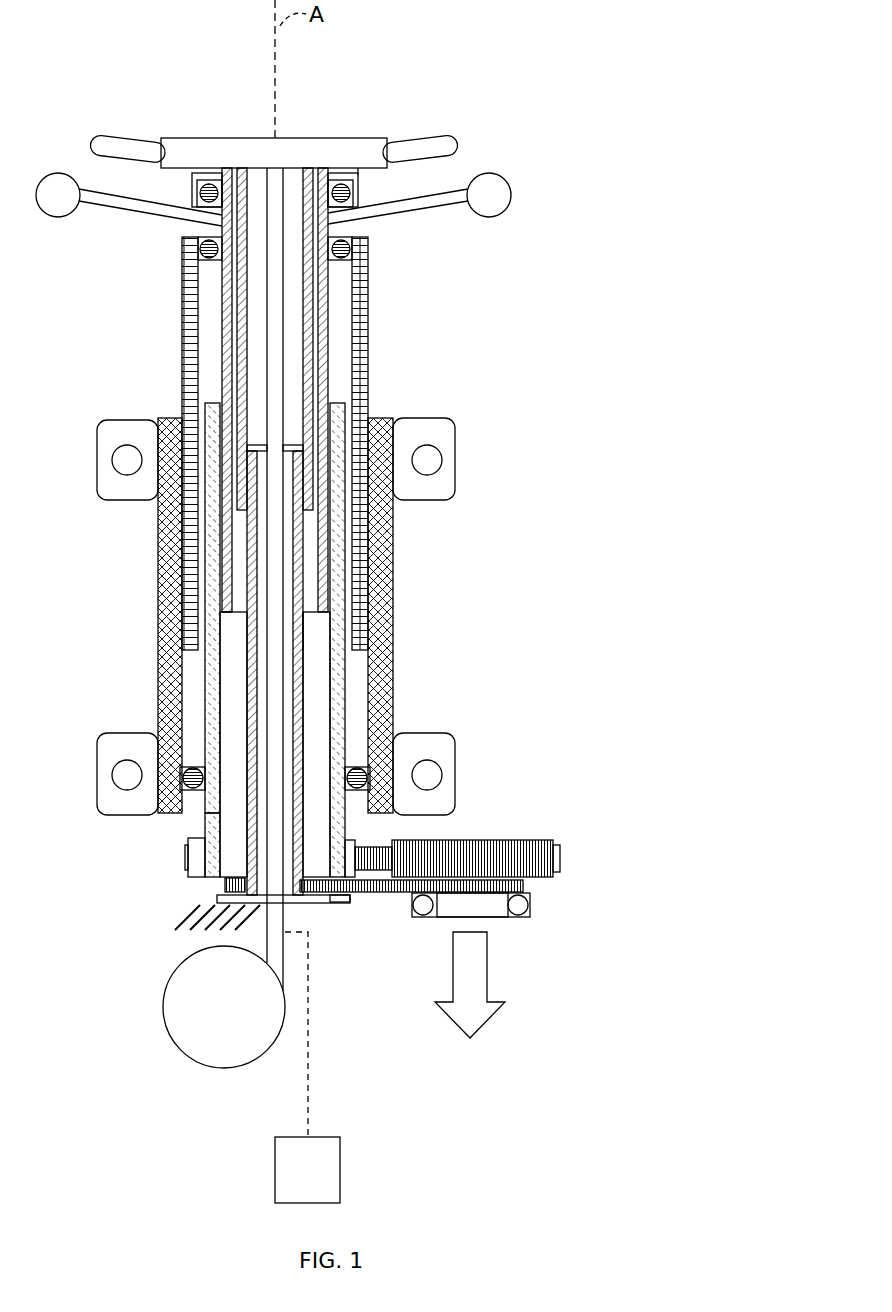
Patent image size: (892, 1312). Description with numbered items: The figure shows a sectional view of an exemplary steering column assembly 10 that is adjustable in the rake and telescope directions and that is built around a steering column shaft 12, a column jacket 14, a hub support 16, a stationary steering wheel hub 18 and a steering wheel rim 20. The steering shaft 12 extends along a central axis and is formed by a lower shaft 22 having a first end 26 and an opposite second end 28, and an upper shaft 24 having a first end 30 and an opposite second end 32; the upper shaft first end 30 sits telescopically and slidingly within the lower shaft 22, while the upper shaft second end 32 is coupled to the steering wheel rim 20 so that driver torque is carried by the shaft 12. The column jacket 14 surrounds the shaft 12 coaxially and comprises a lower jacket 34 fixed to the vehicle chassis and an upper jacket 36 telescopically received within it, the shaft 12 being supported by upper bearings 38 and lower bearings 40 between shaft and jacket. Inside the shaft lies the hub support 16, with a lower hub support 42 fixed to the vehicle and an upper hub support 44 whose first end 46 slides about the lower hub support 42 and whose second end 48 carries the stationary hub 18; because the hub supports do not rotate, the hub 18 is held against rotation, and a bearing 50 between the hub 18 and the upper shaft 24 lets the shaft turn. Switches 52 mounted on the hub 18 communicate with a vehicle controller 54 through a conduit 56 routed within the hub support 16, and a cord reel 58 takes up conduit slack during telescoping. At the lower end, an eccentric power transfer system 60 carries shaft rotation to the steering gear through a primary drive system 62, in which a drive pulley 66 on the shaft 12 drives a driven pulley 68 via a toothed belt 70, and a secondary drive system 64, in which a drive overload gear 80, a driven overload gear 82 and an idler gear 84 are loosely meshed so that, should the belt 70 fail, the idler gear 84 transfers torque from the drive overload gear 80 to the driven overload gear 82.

The steering column assembly 10 is at (563, 88).
The steering column shaft 12 is at (205, 823).
The column jacket 14 is at (157, 658).
The hub support 16 is at (240, 686).
The stationary steering wheel hub 18 is at (315, 138).
The steering wheel rim 20 is at (513, 195).
The lower shaft 22 is at (350, 692).
The upper shaft 24 is at (331, 297).
The first end 26 is at (213, 882).
The second end 28 is at (212, 403).
The first end 30 is at (240, 613).
The second end 32 is at (224, 178).
The lower jacket 34 is at (396, 440).
The upper jacket 36 is at (369, 358).
The upper bearings 38 is at (343, 236).
The lower bearings 40 is at (360, 776).
The lower hub support 42 is at (304, 632).
The upper hub support 44 is at (358, 173).
The first end 46 is at (244, 513).
The second end 48 is at (248, 178).
The bearing 50 is at (316, 195).
The switches 52 is at (96, 140).
The vehicle controller 54 is at (342, 1170).
The conduit 56 is at (272, 325).
The cord reel 58 is at (206, 1067).
The eccentric power transfer system 60 is at (597, 970).
The primary drive system 62 is at (500, 815).
The secondary drive system 64 is at (396, 916).
The drive pulley 66 is at (188, 879).
The driven pulley 68 is at (548, 838).
The toothed belt 70 is at (562, 858).
The drive overload gear 80 is at (222, 887).
The driven overload gear 82 is at (532, 886).
The idler gear 84 is at (359, 906).